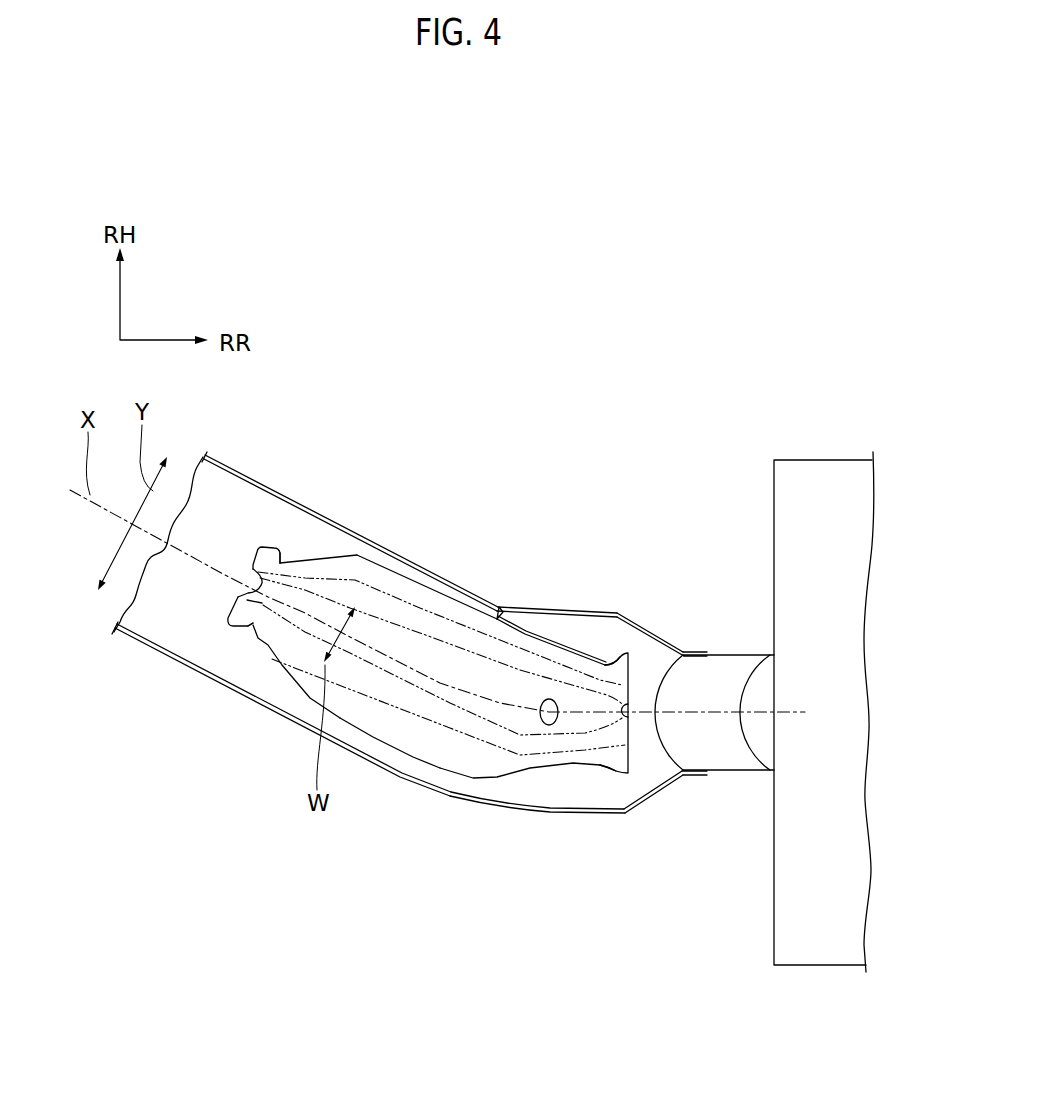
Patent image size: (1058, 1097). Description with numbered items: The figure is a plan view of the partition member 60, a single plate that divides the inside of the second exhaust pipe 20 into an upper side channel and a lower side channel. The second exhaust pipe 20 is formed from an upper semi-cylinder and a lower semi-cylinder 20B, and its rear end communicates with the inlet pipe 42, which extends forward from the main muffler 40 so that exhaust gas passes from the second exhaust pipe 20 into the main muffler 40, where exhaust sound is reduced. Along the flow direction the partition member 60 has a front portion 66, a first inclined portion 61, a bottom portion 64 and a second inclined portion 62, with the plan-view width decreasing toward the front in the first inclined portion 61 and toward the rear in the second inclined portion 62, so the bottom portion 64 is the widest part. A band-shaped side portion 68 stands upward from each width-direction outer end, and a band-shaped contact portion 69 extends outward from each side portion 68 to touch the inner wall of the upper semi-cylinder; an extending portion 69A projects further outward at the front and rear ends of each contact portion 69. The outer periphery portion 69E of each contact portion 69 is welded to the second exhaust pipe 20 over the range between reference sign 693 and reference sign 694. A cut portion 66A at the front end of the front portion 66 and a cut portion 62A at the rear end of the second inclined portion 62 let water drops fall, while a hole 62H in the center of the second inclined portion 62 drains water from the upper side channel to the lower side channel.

The second exhaust pipe 20 is at (126, 643).
The semi-cylinder 20B is at (157, 648).
The main muffler 40 is at (776, 487).
The inlet pipe 42 is at (728, 665).
The partition member 60 is at (498, 608).
The first inclined portion 61 is at (312, 642).
The second inclined portion 62 is at (523, 683).
The cut portion 62A is at (631, 718).
The hole 62H is at (547, 697).
The bottom portion 64 is at (447, 657).
The front portion 66 is at (233, 630).
The cut portion 66A is at (250, 568).
The side portion 68 is at (523, 745).
The contact portion 69 is at (373, 566).
The extending portion 69A is at (270, 547).
The outer periphery portion 69E is at (421, 585).
The reference sign 693 is at (283, 563).
The reference sign 694 is at (605, 658).